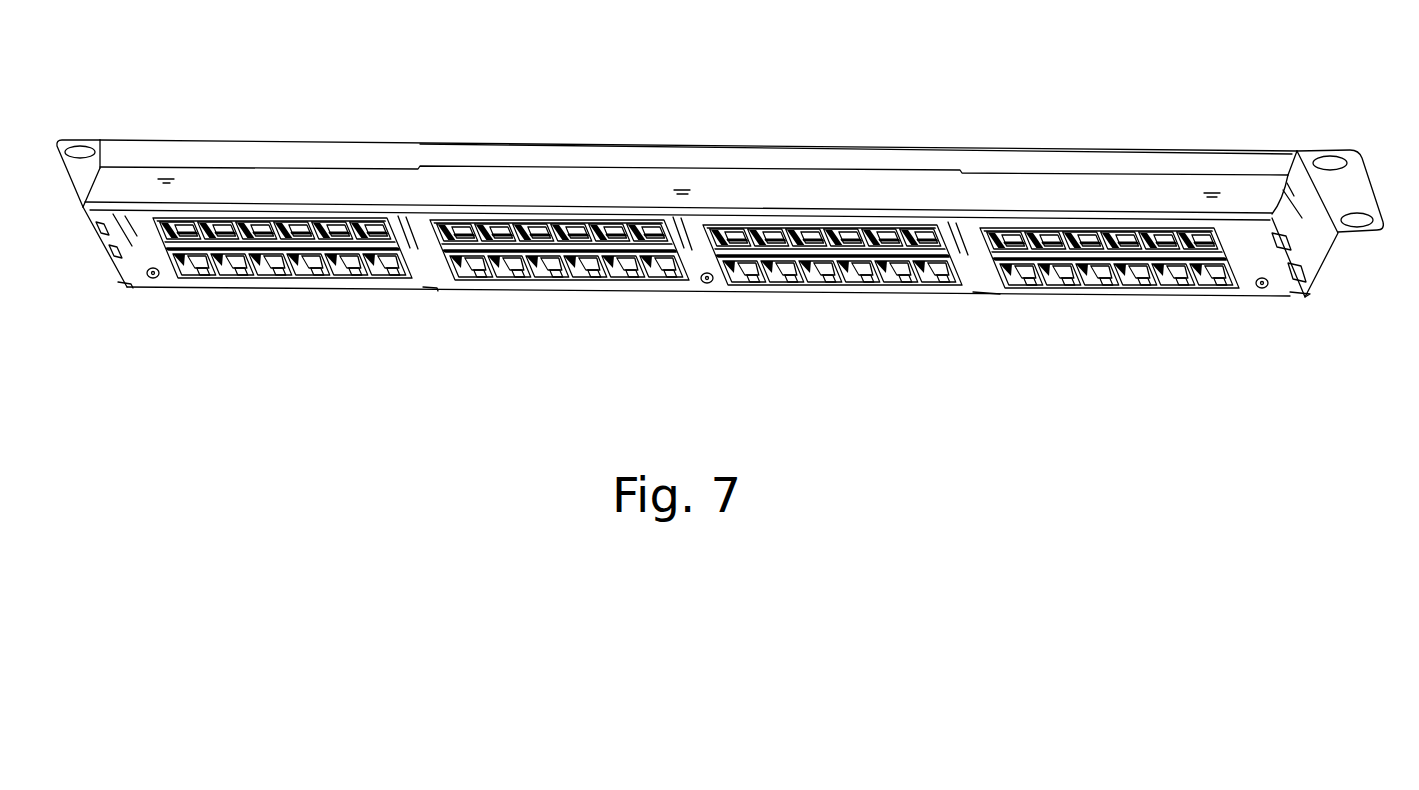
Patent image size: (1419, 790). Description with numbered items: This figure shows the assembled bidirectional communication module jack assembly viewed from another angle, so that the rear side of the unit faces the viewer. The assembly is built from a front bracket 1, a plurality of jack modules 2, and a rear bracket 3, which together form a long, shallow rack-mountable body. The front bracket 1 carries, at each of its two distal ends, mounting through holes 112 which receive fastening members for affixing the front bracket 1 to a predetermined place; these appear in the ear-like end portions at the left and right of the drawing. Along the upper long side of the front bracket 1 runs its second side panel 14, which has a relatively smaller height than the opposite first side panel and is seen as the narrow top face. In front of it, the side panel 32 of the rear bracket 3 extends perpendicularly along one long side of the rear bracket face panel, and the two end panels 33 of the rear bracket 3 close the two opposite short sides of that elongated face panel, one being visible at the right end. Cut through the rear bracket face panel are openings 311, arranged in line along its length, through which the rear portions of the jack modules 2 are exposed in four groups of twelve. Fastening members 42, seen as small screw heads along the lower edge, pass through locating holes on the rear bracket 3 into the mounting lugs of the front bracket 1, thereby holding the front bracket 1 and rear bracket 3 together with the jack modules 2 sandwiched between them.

The front bracket 1 is at (738, 214).
The jack module 2 is at (696, 306).
The rear bracket 3 is at (669, 297).
The second side panel 14 is at (1027, 150).
The side panel 32 is at (1117, 175).
The end panel 33 is at (1310, 247).
The fastening member 42 is at (157, 280).
The mounting through hole 112 is at (80, 148).
The opening 311 is at (255, 275).